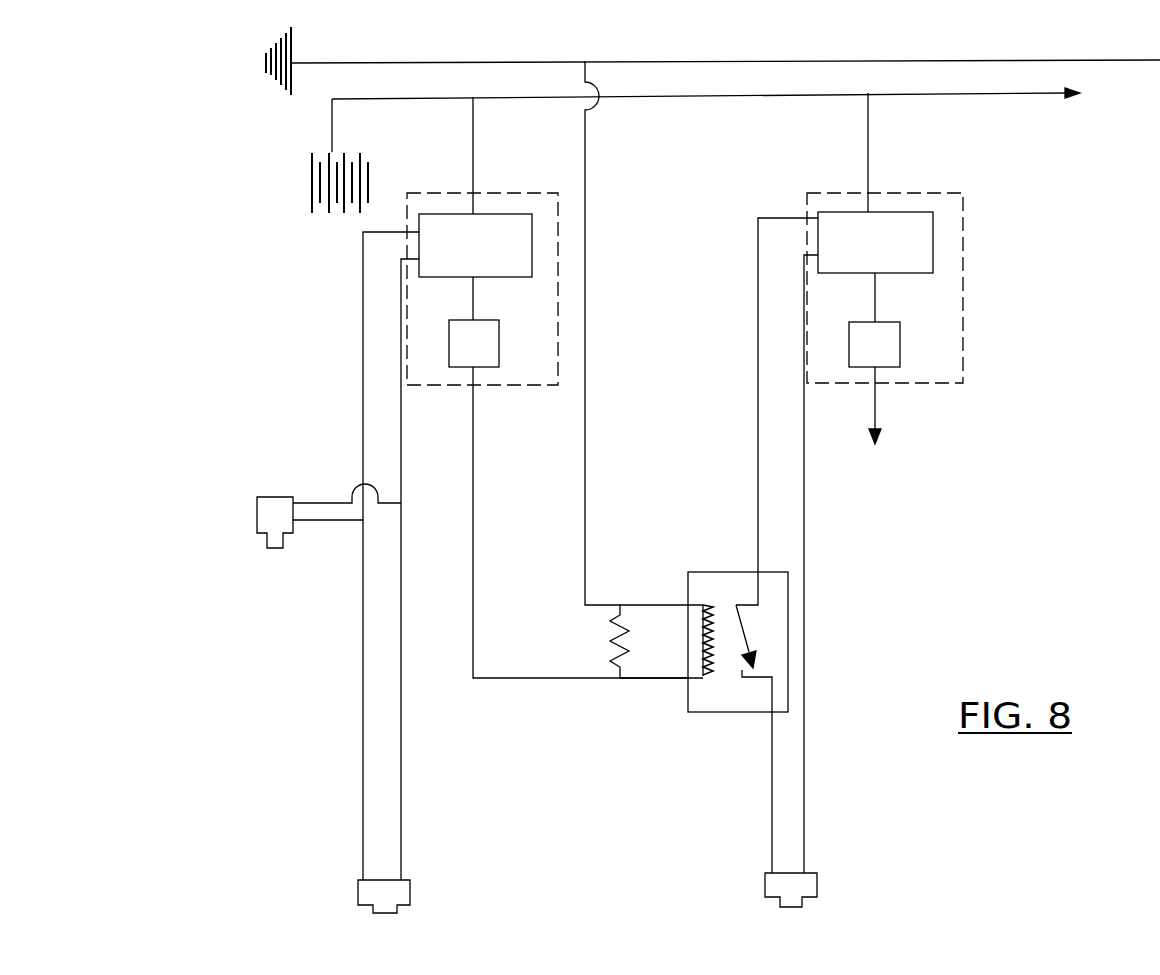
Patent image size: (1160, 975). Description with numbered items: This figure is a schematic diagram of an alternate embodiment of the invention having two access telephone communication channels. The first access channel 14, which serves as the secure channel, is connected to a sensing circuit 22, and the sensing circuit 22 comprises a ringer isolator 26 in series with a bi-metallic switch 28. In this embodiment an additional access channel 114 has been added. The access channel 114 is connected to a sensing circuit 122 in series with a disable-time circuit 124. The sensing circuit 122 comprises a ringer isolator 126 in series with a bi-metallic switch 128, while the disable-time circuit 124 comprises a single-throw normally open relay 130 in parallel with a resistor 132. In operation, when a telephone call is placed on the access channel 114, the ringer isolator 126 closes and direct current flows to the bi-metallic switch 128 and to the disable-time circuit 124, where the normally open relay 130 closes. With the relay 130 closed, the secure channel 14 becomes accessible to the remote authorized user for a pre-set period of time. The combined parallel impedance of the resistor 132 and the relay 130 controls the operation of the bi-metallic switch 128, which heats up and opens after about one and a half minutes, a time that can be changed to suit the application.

The access channel 14 is at (745, 510).
The sensing circuit 22 is at (965, 268).
The ringer isolator 26 is at (933, 237).
The bi-metallic switch 28 is at (900, 347).
The access channel 114 is at (349, 432).
The sensing circuit 122 is at (448, 387).
The disable-time circuit 124 is at (662, 694).
The ringer isolator 126 is at (532, 241).
The bi-metallic switch 128 is at (499, 344).
The single-throw normally open relay 130 is at (716, 712).
The resistor 132 is at (615, 657).